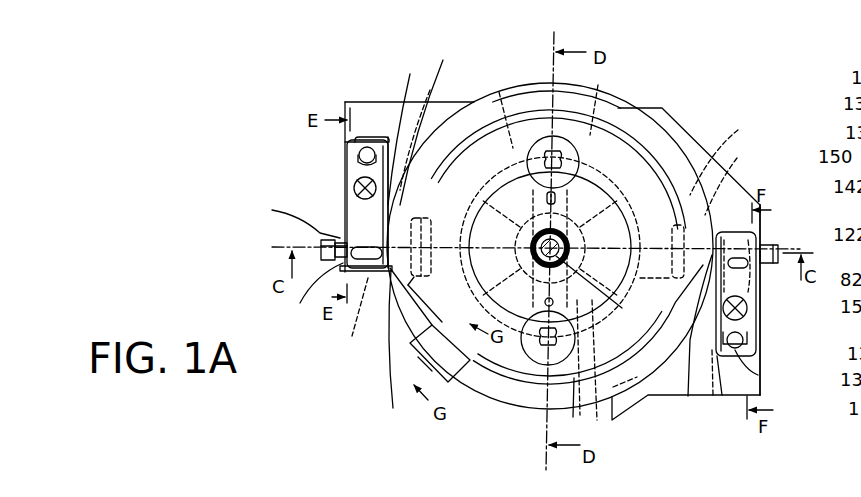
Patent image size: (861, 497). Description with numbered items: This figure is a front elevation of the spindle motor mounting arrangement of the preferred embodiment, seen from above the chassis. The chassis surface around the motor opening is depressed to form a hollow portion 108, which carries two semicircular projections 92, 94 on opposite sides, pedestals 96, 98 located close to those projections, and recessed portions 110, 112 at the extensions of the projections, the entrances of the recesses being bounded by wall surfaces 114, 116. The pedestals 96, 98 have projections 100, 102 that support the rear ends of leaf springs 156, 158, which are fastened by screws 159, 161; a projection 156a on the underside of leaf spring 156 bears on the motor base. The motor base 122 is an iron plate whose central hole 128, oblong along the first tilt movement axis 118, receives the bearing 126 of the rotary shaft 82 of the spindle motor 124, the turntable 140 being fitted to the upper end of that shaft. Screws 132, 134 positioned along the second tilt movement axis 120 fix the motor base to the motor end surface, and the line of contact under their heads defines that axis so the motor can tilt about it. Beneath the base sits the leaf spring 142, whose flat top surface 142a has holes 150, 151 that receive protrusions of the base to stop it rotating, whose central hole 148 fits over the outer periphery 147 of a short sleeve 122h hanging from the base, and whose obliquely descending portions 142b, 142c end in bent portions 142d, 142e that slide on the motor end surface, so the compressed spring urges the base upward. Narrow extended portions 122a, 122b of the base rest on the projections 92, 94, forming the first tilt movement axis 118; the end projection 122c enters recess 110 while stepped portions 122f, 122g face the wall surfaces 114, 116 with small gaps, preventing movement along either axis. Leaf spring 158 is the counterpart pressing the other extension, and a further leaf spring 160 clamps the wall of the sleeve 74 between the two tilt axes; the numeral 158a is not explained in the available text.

The sleeve 74 is at (482, 398).
The rotary shaft 82 is at (599, 293).
The projection 92 is at (345, 197).
The projection 94 is at (760, 183).
The pedestal 96 is at (387, 163).
The pedestal 98 is at (720, 360).
The projection 100 is at (366, 146).
The projection 102 is at (762, 365).
The hollow portion 108 is at (386, 135).
The recessed portion 110 is at (326, 240).
The recessed portion 112 is at (790, 236).
The wall surface 114 is at (345, 223).
The wall surface 116 is at (760, 285).
The first tilt movement axis 118 is at (290, 248).
The second tilt movement axis 120 is at (547, 455).
The motor base 122 is at (678, 132).
The extended portion 122a is at (424, 101).
The extended portion 122b is at (689, 397).
The projection 122c is at (286, 211).
The stepped portion 122f is at (301, 296).
The stepped portion 122g is at (775, 213).
The short sleeve 122h is at (430, 282).
The spindle motor 124 is at (628, 102).
The bearing 126 is at (573, 241).
The hole 128 is at (532, 227).
The screw 132 is at (534, 251).
The screw 134 is at (532, 352).
The turntable 140 is at (600, 84).
The leaf spring 142 is at (688, 115).
The flat top surface 142a is at (607, 422).
The obliquely extending portion 142b is at (412, 300).
The obliquely extending portion 142c is at (737, 155).
The bent portion 142d is at (404, 290).
The bent portion 142e is at (745, 179).
The outer periphery 147 is at (519, 233).
The hole 148 is at (567, 247).
The hole 150 is at (531, 142).
The hole 151 is at (572, 409).
The leaf spring 156 is at (437, 118).
The projection 156a is at (334, 317).
The leaf spring 158 is at (762, 330).
The screw hole 158a is at (752, 305).
The screw 159 is at (343, 179).
The leaf spring 160 is at (417, 351).
The screw 161 is at (762, 348).